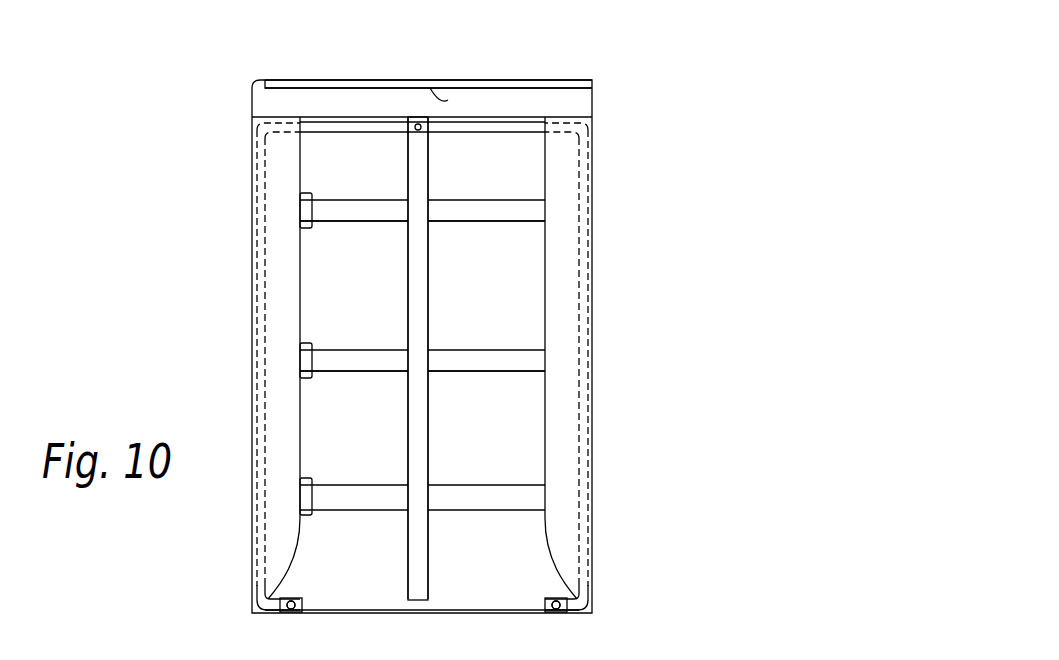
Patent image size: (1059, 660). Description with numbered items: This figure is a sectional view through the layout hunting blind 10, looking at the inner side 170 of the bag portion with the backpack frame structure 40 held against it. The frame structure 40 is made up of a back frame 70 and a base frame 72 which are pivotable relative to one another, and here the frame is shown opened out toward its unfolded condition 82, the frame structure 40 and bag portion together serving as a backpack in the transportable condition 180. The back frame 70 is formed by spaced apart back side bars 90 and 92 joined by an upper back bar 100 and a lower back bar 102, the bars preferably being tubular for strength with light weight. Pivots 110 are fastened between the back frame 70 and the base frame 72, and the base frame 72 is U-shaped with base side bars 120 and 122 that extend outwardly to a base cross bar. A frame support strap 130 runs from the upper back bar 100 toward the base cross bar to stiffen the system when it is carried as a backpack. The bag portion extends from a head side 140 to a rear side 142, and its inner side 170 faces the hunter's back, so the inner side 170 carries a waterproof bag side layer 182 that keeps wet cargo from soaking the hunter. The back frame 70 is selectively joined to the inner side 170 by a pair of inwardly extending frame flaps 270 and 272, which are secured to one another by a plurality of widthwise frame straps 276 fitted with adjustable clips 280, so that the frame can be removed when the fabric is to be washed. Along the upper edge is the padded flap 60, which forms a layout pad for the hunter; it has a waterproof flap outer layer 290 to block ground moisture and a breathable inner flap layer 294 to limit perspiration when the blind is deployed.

The layout hunting blind 10 is at (670, 85).
The backpack frame structure 40 is at (250, 612).
The padded flap 60 is at (576, 70).
The back frame 70 is at (340, 112).
The base frame 72 is at (590, 596).
The unfolded condition 82 is at (697, 286).
The back side bar 90 is at (256, 353).
The back side bar 92 is at (589, 387).
The upper back bar 100 is at (455, 128).
The lower back bar 102 is at (457, 606).
The pivots 110 is at (293, 613).
The base side bar 120 is at (297, 597).
The base side bar 122 is at (555, 597).
The frame support strap 130 is at (422, 434).
The head side 140 is at (372, 615).
The rear side 142 is at (312, 80).
The inner side 170 is at (328, 276).
The transportable condition 180 is at (685, 180).
The waterproof bag side layer 182 is at (374, 449).
The frame flap 270 is at (278, 473).
The frame flap 272 is at (557, 455).
The frame straps 276 is at (352, 210).
The adjustable clips 280 is at (313, 211).
The flap outer layer 290 is at (492, 82).
The inner flap layer 294 is at (430, 90).